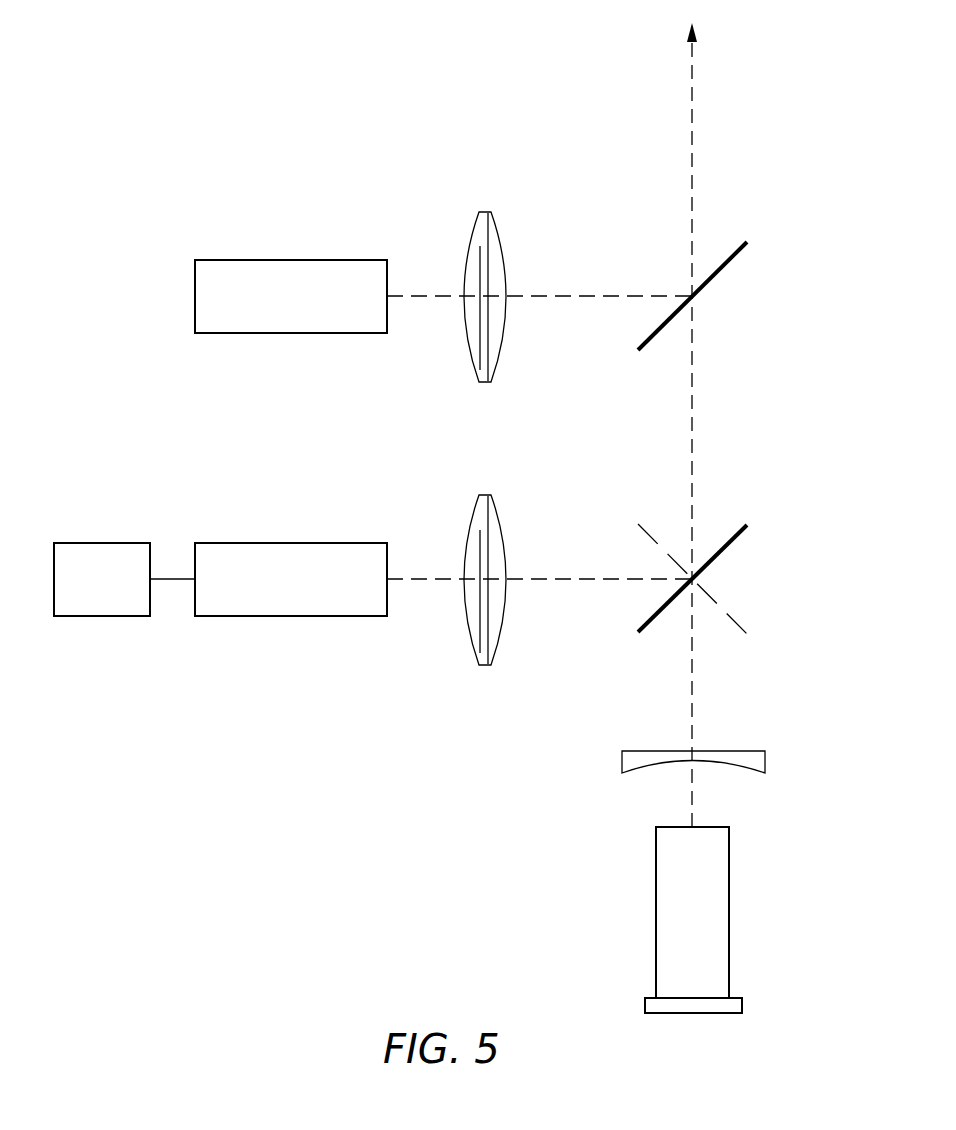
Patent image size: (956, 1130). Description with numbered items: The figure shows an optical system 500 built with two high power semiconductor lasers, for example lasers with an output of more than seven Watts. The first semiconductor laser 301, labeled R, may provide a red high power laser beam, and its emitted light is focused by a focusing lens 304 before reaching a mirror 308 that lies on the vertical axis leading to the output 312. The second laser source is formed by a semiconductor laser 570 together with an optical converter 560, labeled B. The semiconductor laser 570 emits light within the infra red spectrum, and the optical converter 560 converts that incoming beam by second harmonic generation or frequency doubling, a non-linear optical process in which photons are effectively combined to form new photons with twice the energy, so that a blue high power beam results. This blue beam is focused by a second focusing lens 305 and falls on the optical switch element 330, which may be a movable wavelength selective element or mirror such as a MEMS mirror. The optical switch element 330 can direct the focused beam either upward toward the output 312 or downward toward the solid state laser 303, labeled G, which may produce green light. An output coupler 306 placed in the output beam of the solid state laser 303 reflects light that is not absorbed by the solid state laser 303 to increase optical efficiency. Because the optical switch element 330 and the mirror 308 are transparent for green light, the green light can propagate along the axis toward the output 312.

The optical system 500 is at (330, 64).
The output 312 is at (697, 30).
The first semiconductor laser 301 is at (291, 258).
The focusing lens 304 is at (471, 257).
The mirror 308 is at (721, 270).
The semiconductor laser 570 is at (98, 618).
The optical converter 560 is at (288, 618).
The focusing lens 305 is at (470, 620).
The optical switch element 330 is at (721, 553).
The output coupler 306 is at (766, 762).
The solid state laser 303 is at (730, 912).